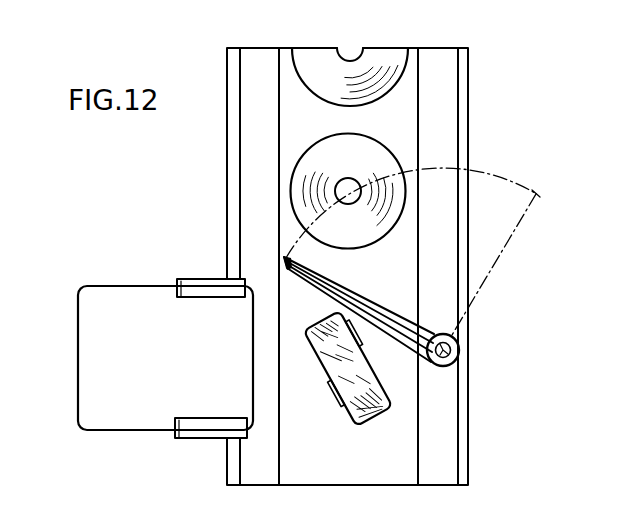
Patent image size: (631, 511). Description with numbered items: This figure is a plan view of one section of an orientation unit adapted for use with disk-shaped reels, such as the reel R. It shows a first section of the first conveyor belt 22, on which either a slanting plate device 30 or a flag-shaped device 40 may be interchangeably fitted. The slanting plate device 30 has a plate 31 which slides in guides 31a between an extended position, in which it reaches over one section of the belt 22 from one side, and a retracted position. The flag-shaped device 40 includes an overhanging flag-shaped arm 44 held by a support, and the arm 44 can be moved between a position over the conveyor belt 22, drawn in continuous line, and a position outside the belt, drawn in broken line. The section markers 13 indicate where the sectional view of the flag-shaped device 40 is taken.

The first conveyor belt 22 is at (322, 129).
The pad / record-like disk member R is at (378, 63).
The flag-shaped arm 44 is at (373, 307).
The flag-shaped device 40 is at (442, 298).
The slanting plate device 30 is at (165, 344).
The plate 31 is at (190, 362).
The guides 31a is at (195, 289).
The section line indicator 13 is at (42, 430).